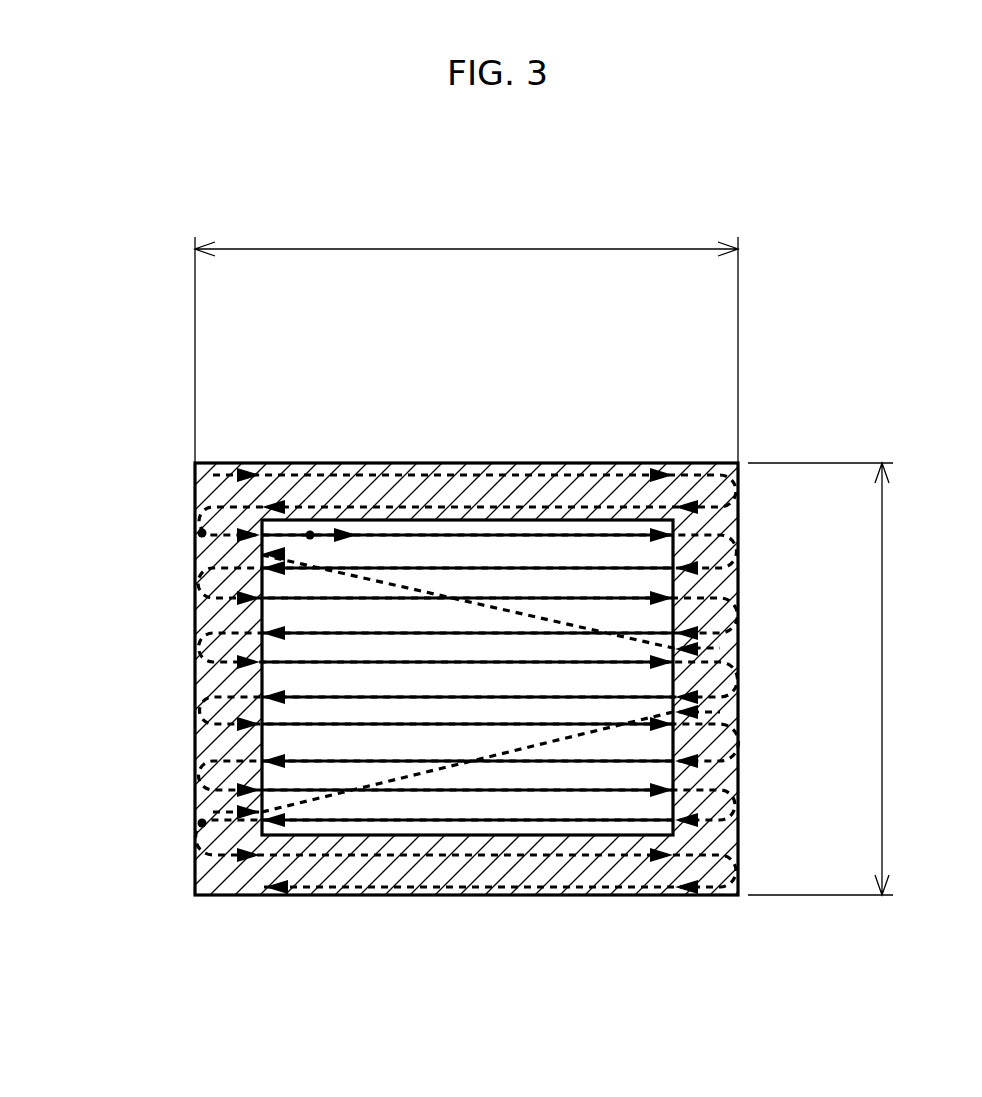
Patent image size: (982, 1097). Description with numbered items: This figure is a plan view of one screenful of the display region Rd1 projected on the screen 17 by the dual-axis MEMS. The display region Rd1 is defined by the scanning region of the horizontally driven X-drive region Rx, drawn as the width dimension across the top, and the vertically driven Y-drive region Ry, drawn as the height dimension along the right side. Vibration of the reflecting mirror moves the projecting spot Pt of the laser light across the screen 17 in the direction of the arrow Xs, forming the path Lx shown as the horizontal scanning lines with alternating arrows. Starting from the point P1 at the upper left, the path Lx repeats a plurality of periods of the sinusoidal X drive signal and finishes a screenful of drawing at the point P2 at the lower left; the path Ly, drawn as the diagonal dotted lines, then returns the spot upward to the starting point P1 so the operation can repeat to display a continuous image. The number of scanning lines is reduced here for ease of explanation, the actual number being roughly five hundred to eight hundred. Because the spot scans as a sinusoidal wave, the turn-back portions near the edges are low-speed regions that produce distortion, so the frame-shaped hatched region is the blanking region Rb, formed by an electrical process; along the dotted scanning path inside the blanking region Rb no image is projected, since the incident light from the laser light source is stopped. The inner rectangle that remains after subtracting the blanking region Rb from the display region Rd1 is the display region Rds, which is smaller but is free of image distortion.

The screen 17 is at (538, 895).
The blanking region Rb is at (683, 895).
The display region Rds is at (310, 743).
The display region Rd1 is at (322, 680).
The path Lx is at (520, 535).
The path Ly is at (432, 775).
The arrow Xs is at (350, 535).
The projecting spot Pt is at (310, 533).
The point P1 is at (200, 533).
The point P2 is at (200, 823).
The X-drive region Rx is at (466, 333).
The Y-drive region Ry is at (839, 679).